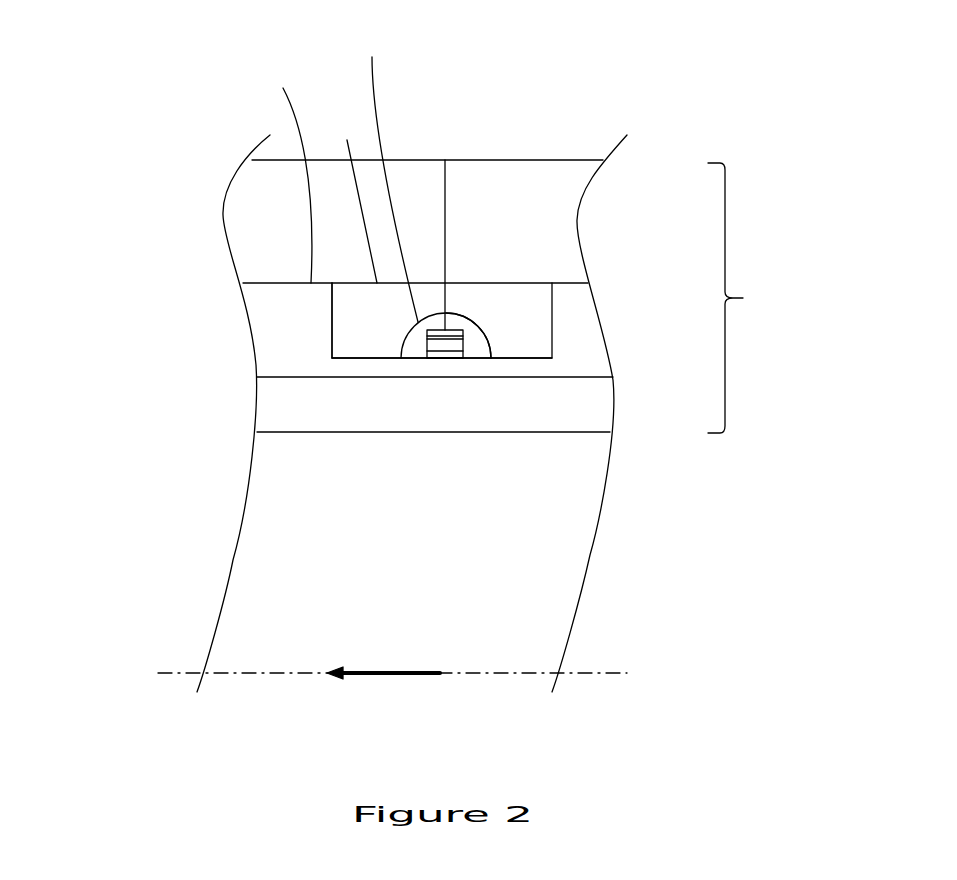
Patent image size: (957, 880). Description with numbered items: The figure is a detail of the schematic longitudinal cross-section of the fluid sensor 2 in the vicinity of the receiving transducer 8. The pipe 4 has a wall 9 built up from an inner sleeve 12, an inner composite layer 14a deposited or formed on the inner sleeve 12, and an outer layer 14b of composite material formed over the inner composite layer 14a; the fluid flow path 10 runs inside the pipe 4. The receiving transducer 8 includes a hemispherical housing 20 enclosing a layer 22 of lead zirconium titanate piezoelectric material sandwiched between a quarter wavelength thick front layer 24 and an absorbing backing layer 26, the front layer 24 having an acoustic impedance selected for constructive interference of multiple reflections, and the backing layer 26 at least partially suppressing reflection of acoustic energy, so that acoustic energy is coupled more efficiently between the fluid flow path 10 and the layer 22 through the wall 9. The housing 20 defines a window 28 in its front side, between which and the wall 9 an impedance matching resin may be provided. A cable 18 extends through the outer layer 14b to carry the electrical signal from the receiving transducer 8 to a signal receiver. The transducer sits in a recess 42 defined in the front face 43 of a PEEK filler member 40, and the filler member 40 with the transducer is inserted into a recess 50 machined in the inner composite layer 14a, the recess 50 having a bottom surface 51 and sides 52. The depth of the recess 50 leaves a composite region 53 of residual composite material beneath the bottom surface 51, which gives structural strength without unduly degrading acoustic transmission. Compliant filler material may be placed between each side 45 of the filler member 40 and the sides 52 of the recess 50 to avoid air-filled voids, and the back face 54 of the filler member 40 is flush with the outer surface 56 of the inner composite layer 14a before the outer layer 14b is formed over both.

The fluid sensor 2 is at (150, 718).
The pipe 4 is at (803, 337).
The receiving transducer 8 is at (460, 284).
The wall 9 is at (741, 298).
The fluid flow path 10 is at (416, 606).
The inner sleeve 12 is at (273, 402).
The inner composite layer 14a is at (267, 329).
The outer layer of composite material 14b is at (247, 215).
The cable 18 is at (445, 160).
The hemispherical housing 20 is at (374, 169).
The layer of lead zirconium titanate piezoelectric material 22 is at (453, 345).
The front layer 24 is at (458, 358).
The absorbing backing layer 26 is at (463, 328).
The window 28 is at (441, 374).
The PEEK filler member 40 is at (222, 344).
The recess 42 is at (374, 169).
The front face 43 is at (332, 430).
The side 45 is at (317, 312).
The recess 50 is at (325, 343).
The bottom surface 51 is at (372, 358).
The sides 52 is at (331, 298).
The composite region 53 is at (495, 370).
The back face 54 is at (350, 194).
The outer surface 56 is at (285, 171).